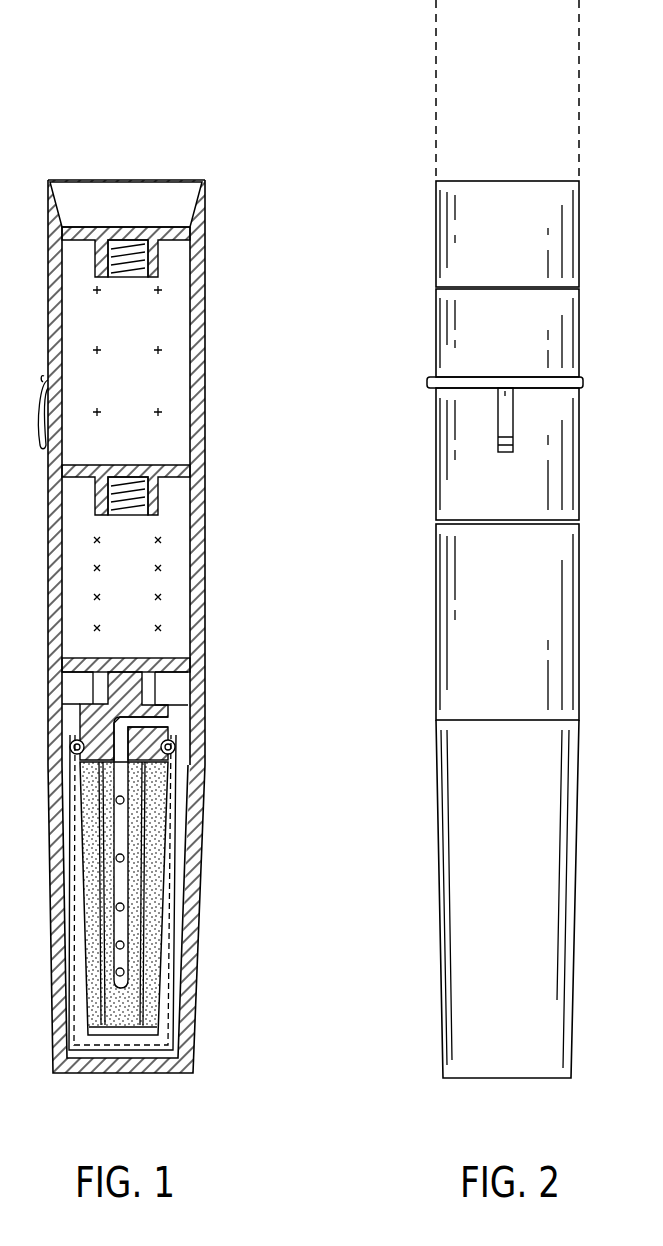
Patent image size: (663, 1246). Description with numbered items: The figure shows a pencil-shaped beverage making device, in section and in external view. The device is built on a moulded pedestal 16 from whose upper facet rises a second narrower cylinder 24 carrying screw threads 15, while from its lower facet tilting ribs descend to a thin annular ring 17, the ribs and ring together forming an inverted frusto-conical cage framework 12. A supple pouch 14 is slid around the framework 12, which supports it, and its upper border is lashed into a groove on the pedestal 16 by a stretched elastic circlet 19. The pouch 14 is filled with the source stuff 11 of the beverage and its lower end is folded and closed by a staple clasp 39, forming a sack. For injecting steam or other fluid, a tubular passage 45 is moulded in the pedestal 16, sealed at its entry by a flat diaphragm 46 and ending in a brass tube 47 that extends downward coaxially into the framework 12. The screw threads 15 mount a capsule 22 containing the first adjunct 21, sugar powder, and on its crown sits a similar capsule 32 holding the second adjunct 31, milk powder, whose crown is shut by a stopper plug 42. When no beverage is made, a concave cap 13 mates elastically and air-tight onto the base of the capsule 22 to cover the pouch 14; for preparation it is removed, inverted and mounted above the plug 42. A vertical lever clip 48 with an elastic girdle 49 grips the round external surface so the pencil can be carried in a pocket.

In FIG. 1, the source stuff 11 is at (160, 787).
In FIG. 1, the cage framework 12 is at (147, 828).
In FIG. 1, the concave cap 13 is at (205, 887).
In FIG. 2, the concave cap 13 is at (435, 163).
In FIG. 1, the supple pouch 14 is at (200, 937).
In FIG. 1, the screw threads 15 is at (172, 414).
In FIG. 1, the pedestal 16 is at (140, 705).
In FIG. 1, the annular ring 17 is at (150, 1030).
In FIG. 1, the elastic circlet 19 is at (177, 747).
In FIG. 1, the first adjunct 21 is at (173, 583).
In FIG. 1, the capsule 22 is at (205, 602).
In FIG. 2, the capsule 22 is at (433, 615).
In FIG. 1, the second narrower cylinder 24 is at (130, 690).
In FIG. 1, the second adjunct 31 is at (190, 243).
In FIG. 1, the capsule 32 is at (140, 298).
In FIG. 2, the capsule 32 is at (433, 435).
In FIG. 1, the staple clasp 39 is at (157, 1050).
In FIG. 1, the stopper plug 42 is at (150, 205).
In FIG. 2, the stopper plug 42 is at (435, 263).
In FIG. 1, the tubular passage 45 is at (170, 725).
In FIG. 1, the flat diaphragm 46 is at (190, 712).
In FIG. 1, the brass tube 47 is at (125, 975).
In FIG. 2, the lever clip 48 is at (503, 417).
In FIG. 1, the elastic girdle 49 is at (205, 382).